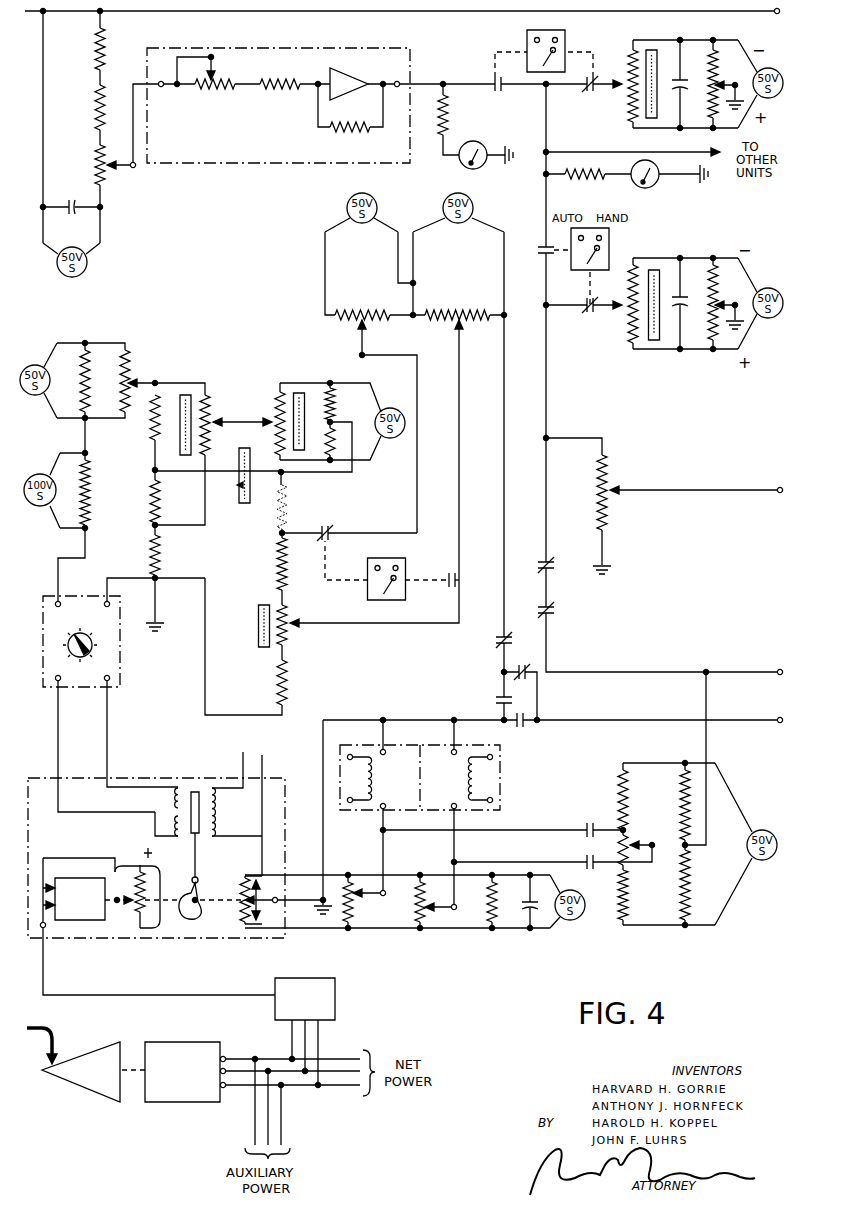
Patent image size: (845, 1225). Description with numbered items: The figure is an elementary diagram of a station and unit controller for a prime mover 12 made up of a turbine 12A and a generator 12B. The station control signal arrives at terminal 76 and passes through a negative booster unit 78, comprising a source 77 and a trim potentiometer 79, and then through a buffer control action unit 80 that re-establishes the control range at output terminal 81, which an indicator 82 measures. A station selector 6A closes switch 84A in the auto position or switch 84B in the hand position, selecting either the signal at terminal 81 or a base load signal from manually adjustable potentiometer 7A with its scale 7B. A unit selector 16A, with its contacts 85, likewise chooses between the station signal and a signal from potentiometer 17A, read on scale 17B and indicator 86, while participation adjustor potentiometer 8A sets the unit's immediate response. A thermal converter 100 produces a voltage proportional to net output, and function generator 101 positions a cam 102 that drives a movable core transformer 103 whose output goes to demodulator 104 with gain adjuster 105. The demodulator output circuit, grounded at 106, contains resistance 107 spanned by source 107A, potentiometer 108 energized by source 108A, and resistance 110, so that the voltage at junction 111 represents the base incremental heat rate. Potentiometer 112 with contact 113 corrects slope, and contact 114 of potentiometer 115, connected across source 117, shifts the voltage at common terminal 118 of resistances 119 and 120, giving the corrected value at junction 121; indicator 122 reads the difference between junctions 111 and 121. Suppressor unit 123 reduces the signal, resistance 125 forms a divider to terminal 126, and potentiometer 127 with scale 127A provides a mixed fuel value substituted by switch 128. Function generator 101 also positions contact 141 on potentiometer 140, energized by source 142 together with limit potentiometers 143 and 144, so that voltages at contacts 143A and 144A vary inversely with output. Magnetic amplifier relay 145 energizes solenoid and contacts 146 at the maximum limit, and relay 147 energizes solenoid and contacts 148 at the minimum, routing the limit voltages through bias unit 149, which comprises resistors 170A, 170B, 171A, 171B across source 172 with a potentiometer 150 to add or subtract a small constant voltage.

The station selector 6A is at (527, 38).
The manually adjustable potentiometer 7A is at (628, 105).
The scale 7B is at (656, 50).
The participation adjustor potentiometer 8A is at (612, 470).
The prime mover 12 is at (141, 1131).
The turbine 12A is at (92, 1092).
The generator 12B is at (185, 1072).
The unit selector 16A is at (609, 243).
The manually adjustable potentiometer 17A is at (628, 325).
The scale 17B is at (656, 343).
The terminal 76 is at (43, 18).
The source 77 is at (88, 272).
The negative booster unit 78 is at (80, 110).
The trim potentiometer 79 is at (96, 156).
The buffer control action unit 80 is at (404, 159).
The output terminal 81 is at (397, 80).
The indicator 82 is at (476, 140).
The switch 84A is at (497, 92).
The switch 84B is at (589, 92).
The capacitor 85 is at (540, 253).
The indicator 86 is at (651, 187).
The thermal converter 100 is at (336, 993).
The function generator 101 is at (162, 940).
The cam 102 is at (191, 891).
The movable core transformer 103 is at (216, 772).
The demodulator 104 is at (120, 656).
The gain adjuster 105 is at (200, 382).
The ground 106 is at (159, 578).
The resistance 107 is at (92, 500).
The source 107A is at (34, 474).
The potentiometer 108 is at (132, 362).
The source 108A is at (33, 365).
The resistance 110 is at (160, 497).
The junction 111 is at (152, 474).
The potentiometer 112 is at (193, 400).
The contact 113 is at (222, 418).
The contact 114 is at (266, 418).
The potentiometer 115 is at (276, 396).
The source of potential 117 is at (404, 409).
The common terminal 118 is at (334, 424).
The resistance 119 is at (336, 398).
The resistance 120 is at (334, 463).
The junction 121 is at (284, 475).
The indicator 122 is at (372, 277).
The series suppressor unit 123 is at (467, 277).
The resistance 125 is at (289, 512).
The terminal 126 is at (280, 535).
The potentiometer 127 is at (290, 645).
The scale 127A is at (258, 615).
The manually operable switch 128 is at (368, 585).
The potentiometer 140 is at (240, 887).
The contact 141 is at (268, 878).
The source 142 is at (582, 917).
The potentiometer 143 is at (343, 923).
The contact 143A is at (371, 895).
The potentiometer 144 is at (415, 892).
The contact 144A is at (444, 910).
The magnetic amplifier relay 145 is at (500, 787).
The solenoid and contacts 146 is at (557, 567).
The magnetic amplifier relay 147 is at (378, 812).
The solenoid and contacts 148 is at (556, 612).
The bias unit 149 is at (670, 921).
The potentiometer 150 is at (628, 840).
The resistor 170A is at (683, 790).
The resistor 170B is at (690, 897).
The resistor 171A is at (620, 797).
The resistor 171B is at (618, 922).
The source 172 is at (774, 832).